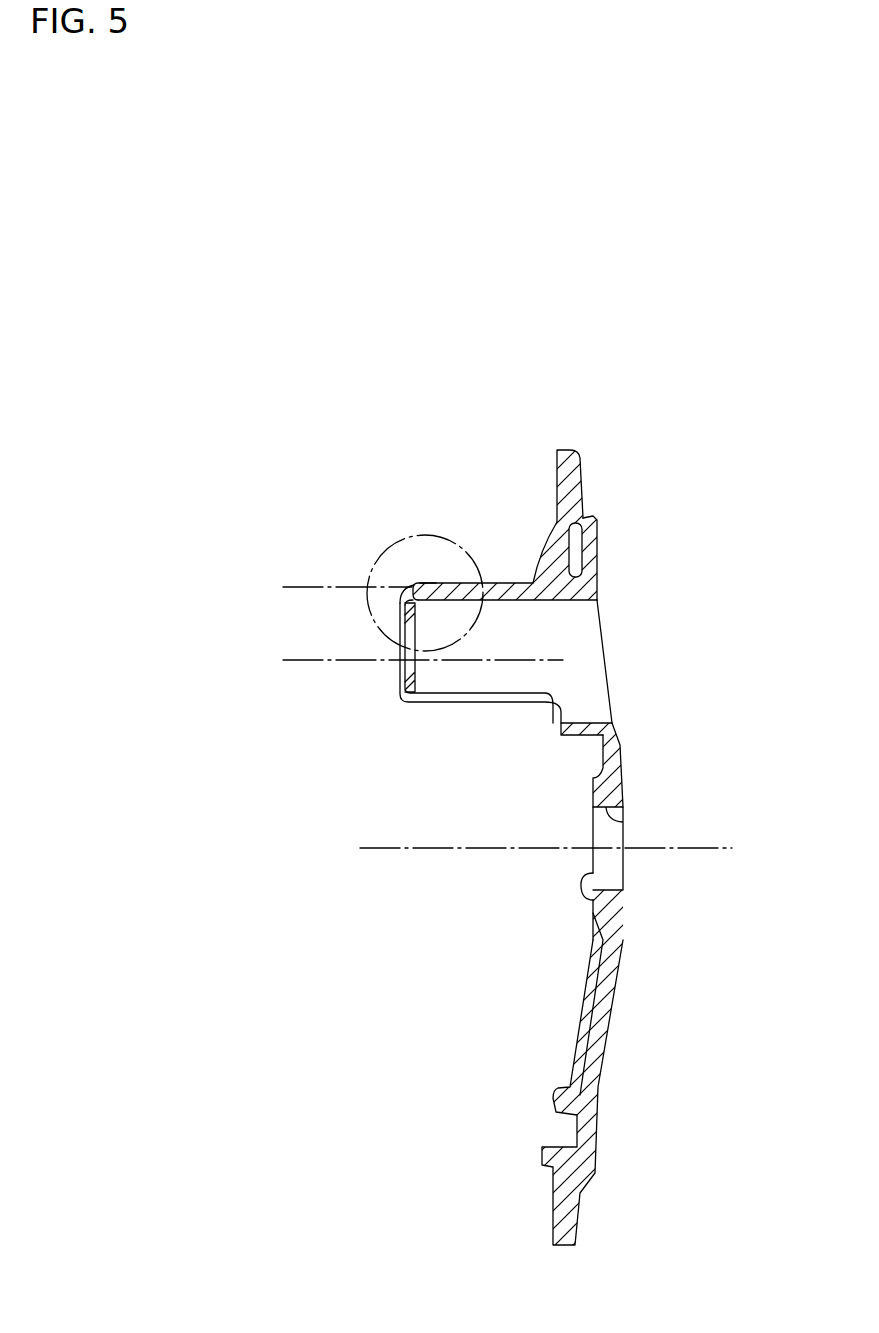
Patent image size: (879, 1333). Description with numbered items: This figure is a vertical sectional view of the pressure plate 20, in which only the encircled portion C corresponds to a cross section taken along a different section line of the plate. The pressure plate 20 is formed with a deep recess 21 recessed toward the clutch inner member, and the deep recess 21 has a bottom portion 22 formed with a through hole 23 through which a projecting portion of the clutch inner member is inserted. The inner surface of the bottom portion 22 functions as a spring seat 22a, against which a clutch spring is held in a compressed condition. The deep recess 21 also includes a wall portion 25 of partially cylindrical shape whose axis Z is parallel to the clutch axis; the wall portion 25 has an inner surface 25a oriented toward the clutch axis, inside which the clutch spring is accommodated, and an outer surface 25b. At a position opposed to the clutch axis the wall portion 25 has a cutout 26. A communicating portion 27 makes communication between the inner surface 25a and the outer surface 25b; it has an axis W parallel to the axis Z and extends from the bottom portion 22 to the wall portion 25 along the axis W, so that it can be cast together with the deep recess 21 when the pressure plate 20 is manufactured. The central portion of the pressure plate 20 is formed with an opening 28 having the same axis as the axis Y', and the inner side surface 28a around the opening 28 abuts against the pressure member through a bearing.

The pressure plate 20 is at (623, 775).
The deep recess 21 is at (553, 650).
The bottom portion 22 is at (405, 612).
The spring seat 22a is at (408, 616).
The through hole 23 is at (410, 642).
The wall portion 25 is at (527, 580).
The inner surface 25a is at (535, 600).
The outer surface 25b is at (583, 506).
The cutout 26 is at (478, 709).
The communicating portion 27 is at (428, 583).
The opening 28 is at (623, 823).
The inner side surface 28a is at (593, 875).
The encircled portion C is at (459, 527).
The axis W is at (297, 587).
The axis Z is at (338, 660).
The axis Y' is at (515, 898).